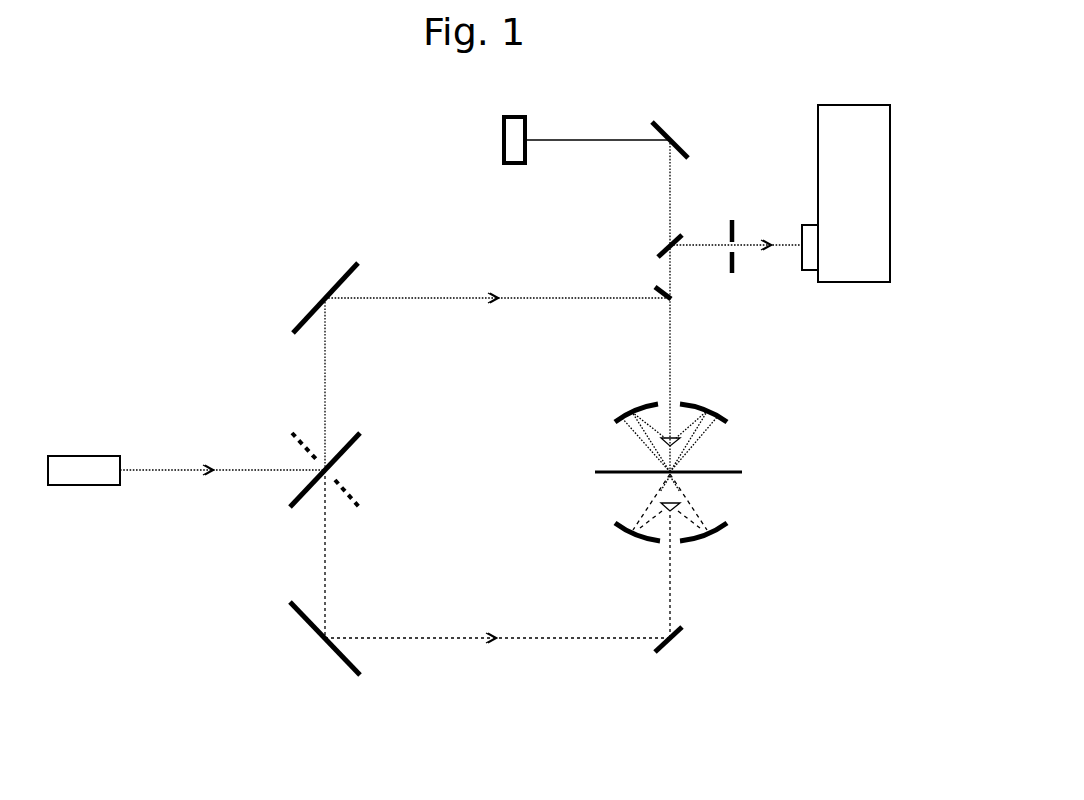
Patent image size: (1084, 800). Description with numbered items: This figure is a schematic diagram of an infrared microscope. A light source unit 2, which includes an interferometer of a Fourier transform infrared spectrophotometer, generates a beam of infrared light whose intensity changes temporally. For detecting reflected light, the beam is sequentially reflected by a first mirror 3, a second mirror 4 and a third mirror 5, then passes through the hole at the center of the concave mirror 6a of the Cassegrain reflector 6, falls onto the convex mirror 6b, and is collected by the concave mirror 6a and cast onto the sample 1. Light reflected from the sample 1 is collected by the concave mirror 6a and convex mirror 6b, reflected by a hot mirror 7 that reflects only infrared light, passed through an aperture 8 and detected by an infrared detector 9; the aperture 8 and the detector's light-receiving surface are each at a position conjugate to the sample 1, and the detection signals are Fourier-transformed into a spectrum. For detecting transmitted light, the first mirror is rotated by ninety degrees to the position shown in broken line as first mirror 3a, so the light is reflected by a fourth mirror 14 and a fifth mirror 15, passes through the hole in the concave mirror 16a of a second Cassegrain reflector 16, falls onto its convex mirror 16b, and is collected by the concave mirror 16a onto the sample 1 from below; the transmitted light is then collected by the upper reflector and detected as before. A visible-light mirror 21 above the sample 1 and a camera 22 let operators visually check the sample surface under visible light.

The sample 1 is at (663, 468).
The light source unit 2 is at (85, 486).
The first mirror 3 is at (357, 443).
The first mirror 3a is at (357, 497).
The second mirror 4 is at (305, 318).
The third mirror 5 is at (657, 288).
The Cassegrain reflector 6 is at (726, 438).
The concave mirror 6a is at (727, 418).
The convex mirror 6b is at (683, 443).
The hot mirror 7 is at (656, 253).
The aperture 8 is at (742, 253).
The infrared detector 9 is at (862, 282).
The fourth mirror 14 is at (305, 623).
The fifth mirror 15 is at (680, 633).
The Cassegrain reflector 16 is at (738, 507).
The concave mirror 16a is at (727, 525).
The convex mirror 16b is at (687, 507).
The visible-light mirror 21 is at (672, 133).
The camera 22 is at (499, 129).